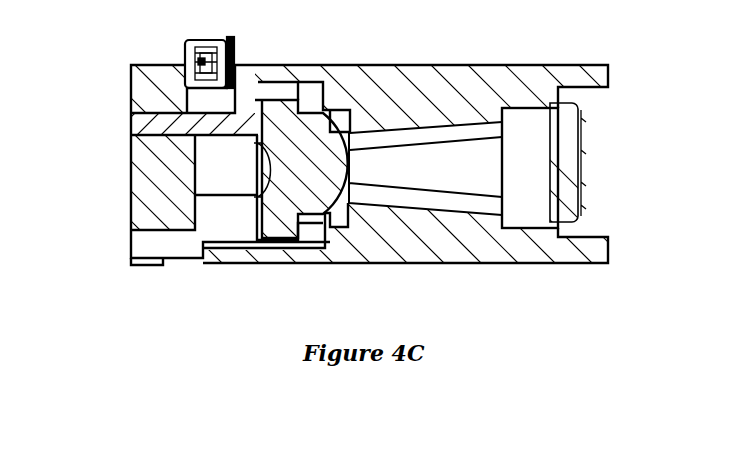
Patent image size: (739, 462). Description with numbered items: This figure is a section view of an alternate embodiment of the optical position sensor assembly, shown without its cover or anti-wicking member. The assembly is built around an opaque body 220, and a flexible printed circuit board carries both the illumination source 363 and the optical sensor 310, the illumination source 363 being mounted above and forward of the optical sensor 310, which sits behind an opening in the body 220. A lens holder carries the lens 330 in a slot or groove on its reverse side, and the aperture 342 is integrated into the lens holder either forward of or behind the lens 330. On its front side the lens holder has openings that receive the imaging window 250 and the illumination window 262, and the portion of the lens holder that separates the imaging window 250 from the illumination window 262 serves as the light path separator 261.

The opaque body 220 is at (457, 64).
The imaging window 250 is at (128, 195).
The light path separator 261 is at (124, 135).
The illumination window 262 is at (143, 90).
The optical sensor 310 is at (577, 150).
The lens 330 is at (300, 185).
The aperture 342 is at (258, 170).
The illumination source 363 is at (208, 38).